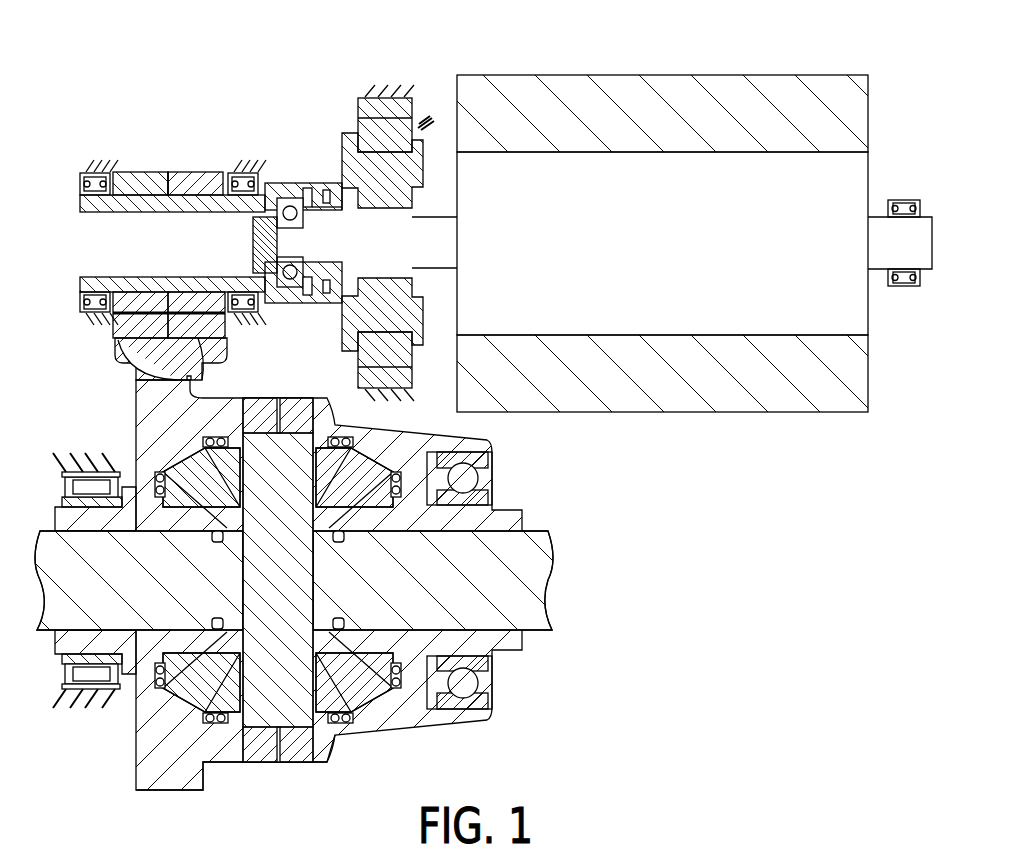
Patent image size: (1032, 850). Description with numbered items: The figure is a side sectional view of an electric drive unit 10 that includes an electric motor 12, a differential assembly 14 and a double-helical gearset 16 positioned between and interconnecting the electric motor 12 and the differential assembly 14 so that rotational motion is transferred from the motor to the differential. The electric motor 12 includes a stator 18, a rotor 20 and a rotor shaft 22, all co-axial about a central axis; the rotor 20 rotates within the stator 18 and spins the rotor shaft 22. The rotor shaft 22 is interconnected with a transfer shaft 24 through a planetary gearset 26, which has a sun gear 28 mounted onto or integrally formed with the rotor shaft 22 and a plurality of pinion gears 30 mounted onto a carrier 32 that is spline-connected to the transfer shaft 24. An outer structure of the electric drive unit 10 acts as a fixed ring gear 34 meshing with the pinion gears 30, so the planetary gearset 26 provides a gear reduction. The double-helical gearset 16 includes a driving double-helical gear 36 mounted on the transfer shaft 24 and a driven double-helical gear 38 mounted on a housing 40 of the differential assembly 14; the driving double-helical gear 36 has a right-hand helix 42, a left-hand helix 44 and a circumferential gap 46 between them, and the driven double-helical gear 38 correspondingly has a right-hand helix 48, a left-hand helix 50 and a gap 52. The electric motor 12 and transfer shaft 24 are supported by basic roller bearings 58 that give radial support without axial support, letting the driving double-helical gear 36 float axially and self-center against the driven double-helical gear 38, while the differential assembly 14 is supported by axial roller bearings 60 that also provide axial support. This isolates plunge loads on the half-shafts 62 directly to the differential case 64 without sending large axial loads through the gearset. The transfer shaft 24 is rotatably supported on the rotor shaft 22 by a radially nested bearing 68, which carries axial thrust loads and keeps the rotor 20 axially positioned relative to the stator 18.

The electric drive unit 10 is at (733, 632).
The electric motor 12 is at (735, 418).
The differential assembly 14 is at (340, 760).
The double-helical gearset 16 is at (100, 325).
The stator 18 is at (637, 98).
The rotor 20 is at (866, 178).
The rotor shaft 22 is at (350, 240).
The transfer shaft 24 is at (112, 205).
The planetary gearset 26 is at (424, 122).
The sun gear 28 is at (398, 228).
The pinion gears 30 is at (372, 125).
The carrier 32 is at (352, 340).
The fixed ring gear 34 is at (385, 97).
The driving double-helical gear 36 is at (160, 178).
The driven double-helical gear 38 is at (225, 328).
The housing 40 is at (158, 432).
The right-hand helix 42 is at (195, 178).
The left-hand helix 44 is at (143, 178).
The gap 46 is at (170, 200).
The right-hand helix 48 is at (143, 330).
The left-hand helix 50 is at (200, 345).
The gap 52 is at (140, 375).
The basic roller bearings 58 is at (902, 200).
The axial roller bearings 60 is at (256, 216).
The half-shafts 62 is at (525, 585).
The differential case 64 is at (468, 707).
The radially nested bearing 68 is at (254, 282).